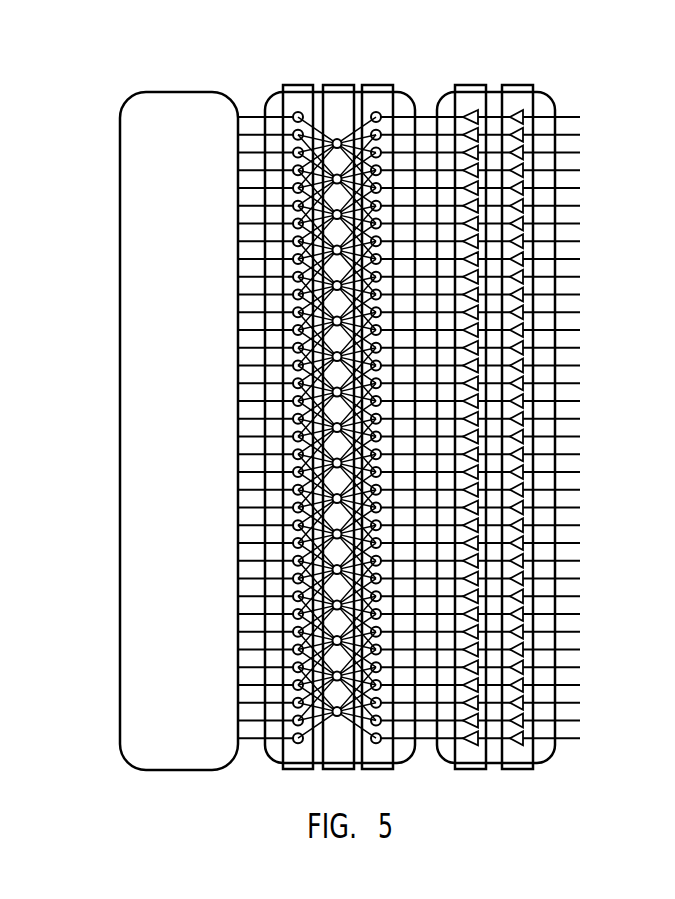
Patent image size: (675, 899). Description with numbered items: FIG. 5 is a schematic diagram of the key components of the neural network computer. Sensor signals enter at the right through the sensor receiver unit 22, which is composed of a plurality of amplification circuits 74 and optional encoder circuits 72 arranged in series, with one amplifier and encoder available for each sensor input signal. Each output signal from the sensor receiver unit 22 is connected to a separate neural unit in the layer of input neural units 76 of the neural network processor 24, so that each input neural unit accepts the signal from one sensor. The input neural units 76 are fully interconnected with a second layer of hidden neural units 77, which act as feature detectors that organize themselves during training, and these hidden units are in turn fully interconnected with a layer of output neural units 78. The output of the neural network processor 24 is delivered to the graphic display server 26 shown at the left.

The graphic display server 26 is at (137, 160).
The neural network processor 24 is at (278, 99).
The output neural units 78 is at (297, 97).
The hidden neural units 77 is at (336, 99).
The input neural units 76 is at (375, 98).
The sensor receiver unit 22 is at (445, 108).
The amplification circuits 74 is at (473, 97).
The encoder circuits 72 is at (517, 97).